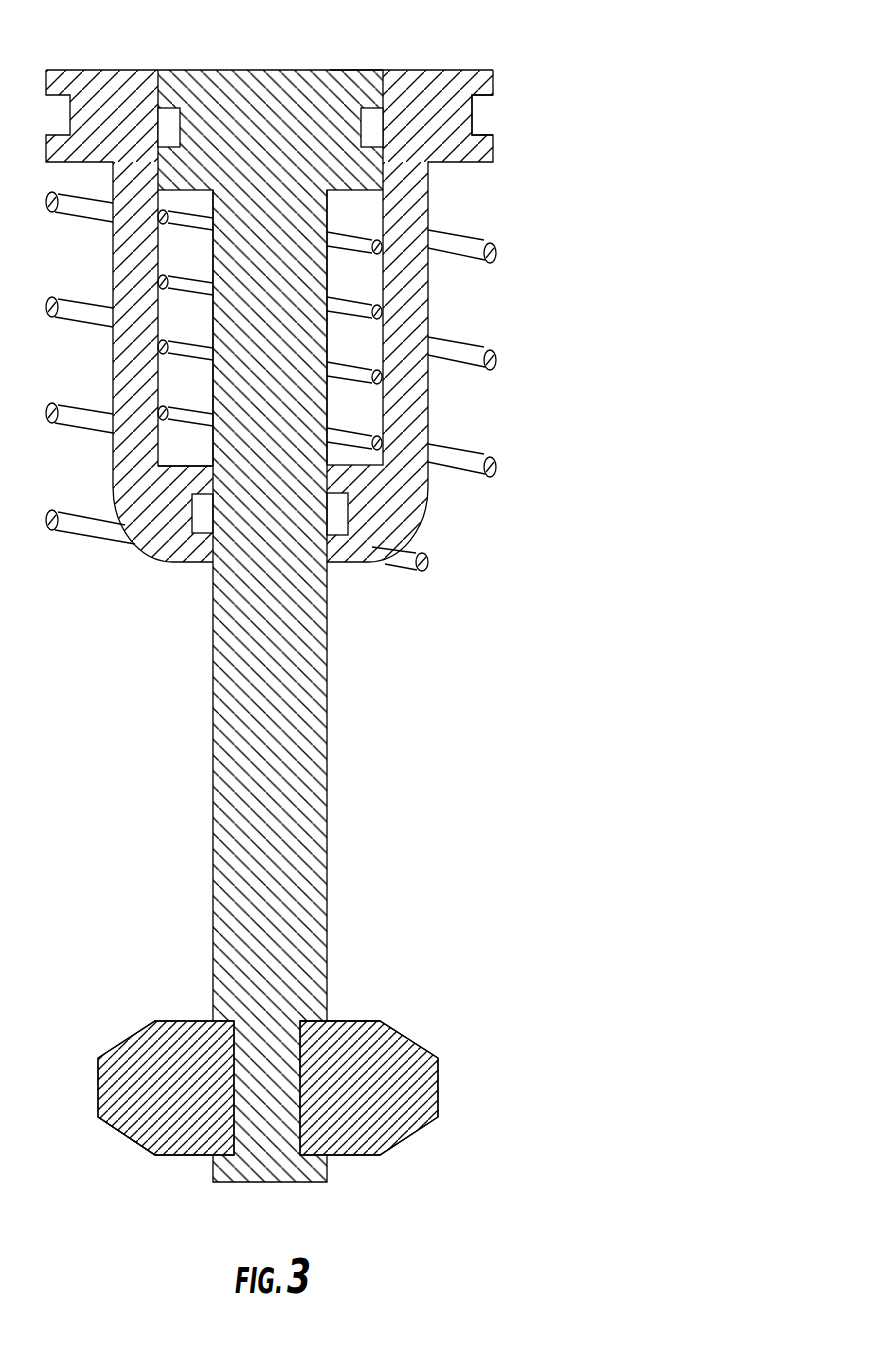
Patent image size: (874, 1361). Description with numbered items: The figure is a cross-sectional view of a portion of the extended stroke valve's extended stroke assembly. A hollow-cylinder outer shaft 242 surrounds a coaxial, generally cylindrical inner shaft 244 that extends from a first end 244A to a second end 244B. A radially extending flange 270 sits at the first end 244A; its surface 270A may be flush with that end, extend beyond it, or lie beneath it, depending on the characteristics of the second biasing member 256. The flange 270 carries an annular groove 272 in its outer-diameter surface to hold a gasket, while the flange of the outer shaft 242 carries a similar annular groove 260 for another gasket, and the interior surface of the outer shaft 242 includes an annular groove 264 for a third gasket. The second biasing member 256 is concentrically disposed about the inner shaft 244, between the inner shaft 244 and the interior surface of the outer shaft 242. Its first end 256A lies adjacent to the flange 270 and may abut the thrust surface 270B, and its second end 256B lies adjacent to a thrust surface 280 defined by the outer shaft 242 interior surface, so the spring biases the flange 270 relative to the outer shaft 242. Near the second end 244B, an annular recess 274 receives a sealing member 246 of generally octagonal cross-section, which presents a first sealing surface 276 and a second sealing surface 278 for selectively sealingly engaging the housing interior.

The outer shaft 242 is at (418, 107).
The inner shaft 244 is at (300, 810).
The first end 244A is at (302, 70).
The second end 244B is at (285, 1183).
The sealing member 246 is at (417, 1055).
The second biasing member 256 is at (410, 319).
The first end 256A is at (362, 218).
The second end 256B is at (380, 445).
The annular groove 260 is at (487, 130).
The annular groove 264 is at (338, 523).
The flange 270 is at (167, 87).
The surface 270A is at (358, 68).
The thrust surface 270B is at (188, 190).
The annular groove 272 is at (163, 128).
The annular recess 274 is at (307, 1022).
The first sealing surface 276 is at (132, 1037).
The second sealing surface 278 is at (131, 1140).
The thrust surface 280 is at (185, 467).